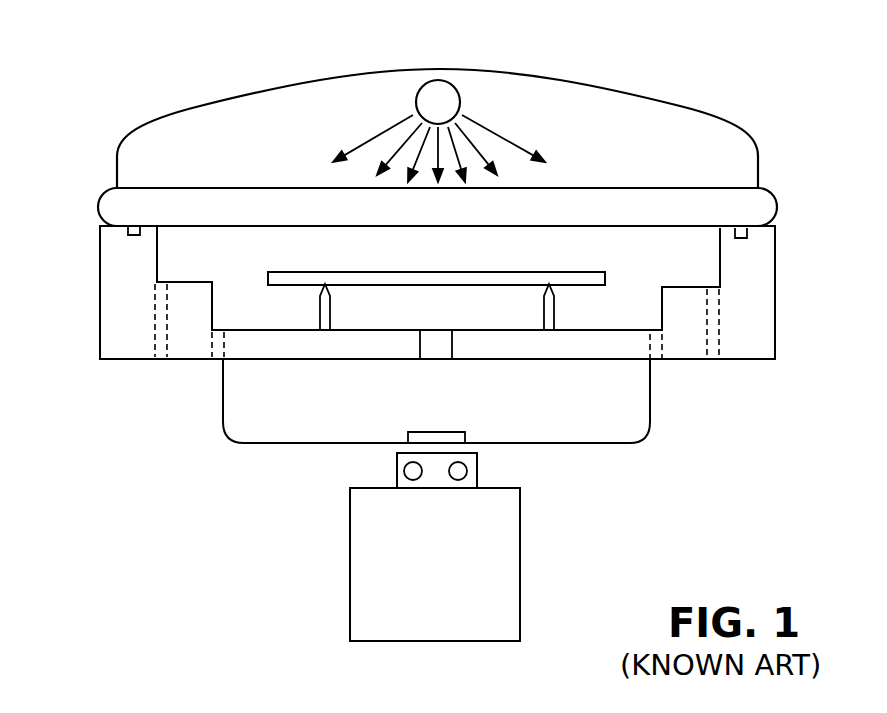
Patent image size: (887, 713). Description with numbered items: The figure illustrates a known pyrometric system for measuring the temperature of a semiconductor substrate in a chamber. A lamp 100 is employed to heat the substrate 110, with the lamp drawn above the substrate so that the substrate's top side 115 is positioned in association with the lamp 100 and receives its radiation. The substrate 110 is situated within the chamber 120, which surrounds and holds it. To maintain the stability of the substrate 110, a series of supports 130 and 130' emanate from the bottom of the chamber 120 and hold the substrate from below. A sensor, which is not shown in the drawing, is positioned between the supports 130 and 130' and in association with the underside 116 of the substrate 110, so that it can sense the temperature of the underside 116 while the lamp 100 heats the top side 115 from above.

The lamp 100 is at (437, 102).
The substrate 110 is at (325, 277).
The top side 115 is at (444, 264).
The underside 116 is at (444, 294).
The chamber 120 is at (123, 308).
The support 130 is at (283, 307).
The support 130' is at (593, 307).